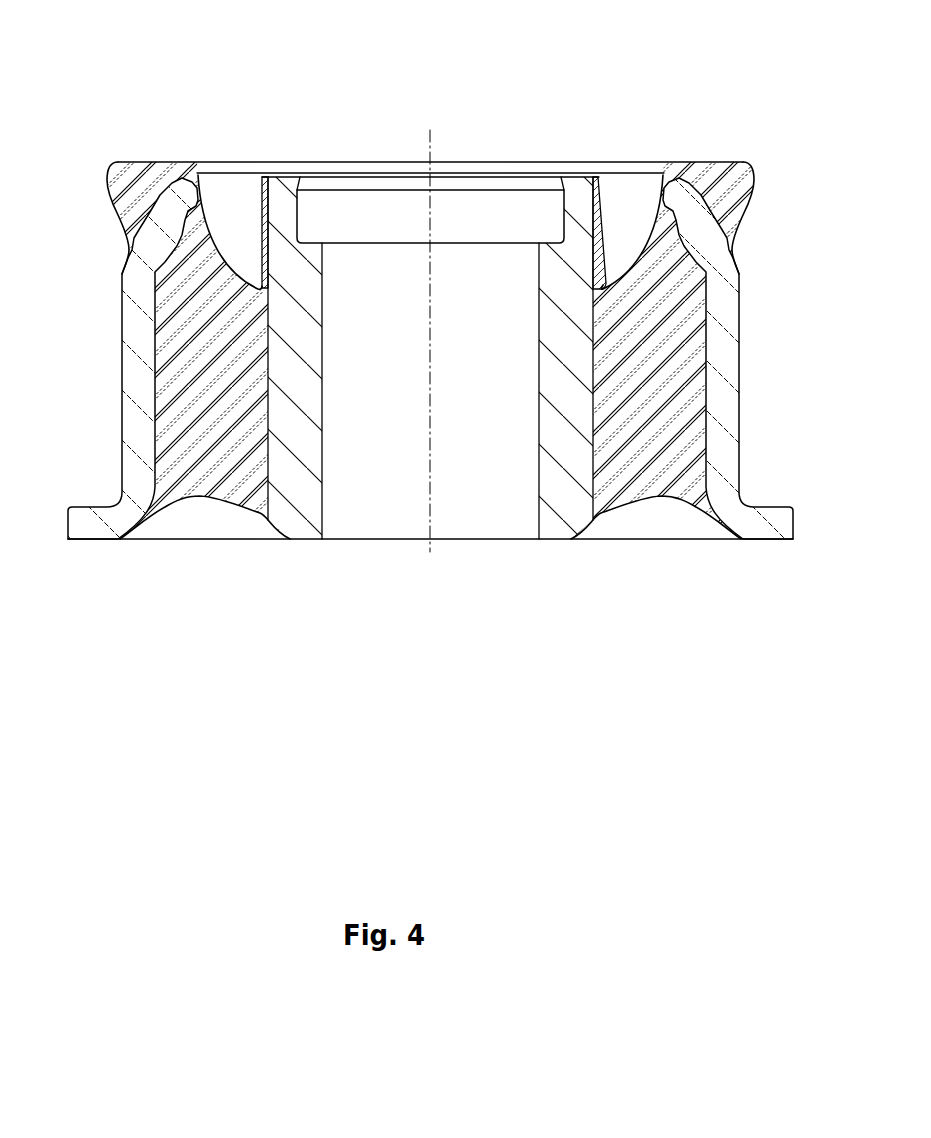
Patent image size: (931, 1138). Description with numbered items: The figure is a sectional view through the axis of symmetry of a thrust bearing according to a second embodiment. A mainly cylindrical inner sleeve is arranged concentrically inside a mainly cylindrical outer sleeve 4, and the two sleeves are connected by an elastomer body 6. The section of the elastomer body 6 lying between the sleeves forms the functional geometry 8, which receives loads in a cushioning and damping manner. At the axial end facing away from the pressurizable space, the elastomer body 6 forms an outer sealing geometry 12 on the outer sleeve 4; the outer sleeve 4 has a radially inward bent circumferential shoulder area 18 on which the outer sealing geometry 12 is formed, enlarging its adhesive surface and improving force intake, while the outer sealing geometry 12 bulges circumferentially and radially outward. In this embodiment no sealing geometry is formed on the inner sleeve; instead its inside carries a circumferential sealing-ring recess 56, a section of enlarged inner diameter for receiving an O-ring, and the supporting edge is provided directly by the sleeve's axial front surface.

The outer sleeve 4 is at (712, 358).
The elastomer body 6 is at (683, 438).
The functional geometry 8 is at (647, 308).
The outer sealing geometry 12 is at (733, 162).
The shoulder area 18 is at (702, 225).
The sealing-ring recess 56 is at (306, 217).